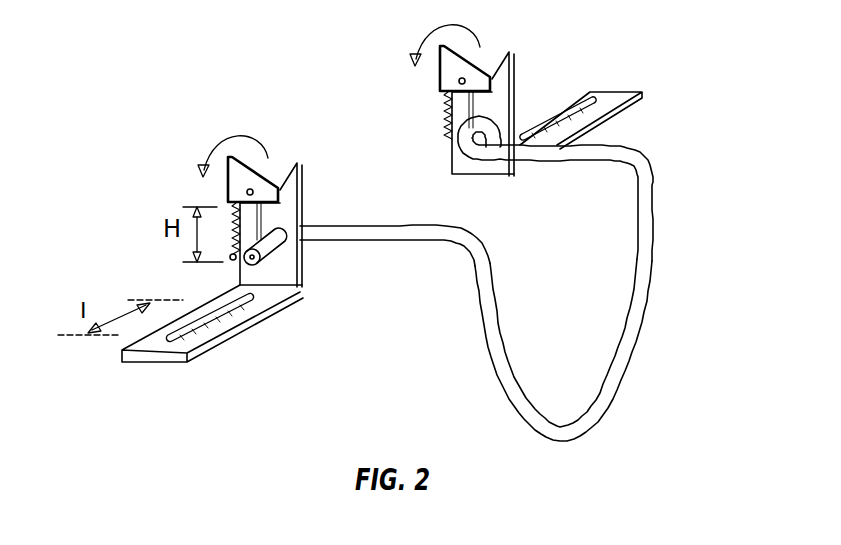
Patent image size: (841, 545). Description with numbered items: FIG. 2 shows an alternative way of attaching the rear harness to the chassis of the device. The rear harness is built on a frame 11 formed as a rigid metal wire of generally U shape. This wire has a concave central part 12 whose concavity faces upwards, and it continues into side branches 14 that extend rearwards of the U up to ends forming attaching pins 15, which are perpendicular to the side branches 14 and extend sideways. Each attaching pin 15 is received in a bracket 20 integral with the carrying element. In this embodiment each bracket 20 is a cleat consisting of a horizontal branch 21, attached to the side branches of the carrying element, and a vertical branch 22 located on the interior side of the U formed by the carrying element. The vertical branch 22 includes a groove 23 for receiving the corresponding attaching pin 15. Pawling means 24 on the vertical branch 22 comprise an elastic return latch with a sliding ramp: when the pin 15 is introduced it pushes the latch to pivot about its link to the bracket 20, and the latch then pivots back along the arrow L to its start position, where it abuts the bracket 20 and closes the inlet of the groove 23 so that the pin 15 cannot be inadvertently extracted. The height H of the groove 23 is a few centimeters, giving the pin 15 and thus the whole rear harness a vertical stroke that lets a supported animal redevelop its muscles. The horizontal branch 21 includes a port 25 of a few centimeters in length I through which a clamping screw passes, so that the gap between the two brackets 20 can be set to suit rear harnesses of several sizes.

The frame 11 is at (680, 281).
The concave central part 12 is at (588, 427).
The side branches 14 is at (387, 247).
The attaching pins 15 is at (263, 252).
The bracket 20 is at (303, 211).
The horizontal branch 21 is at (210, 347).
The vertical branch 22 is at (305, 212).
The groove 23 is at (272, 224).
The pawling means 24 is at (268, 173).
The port 25 is at (173, 337).